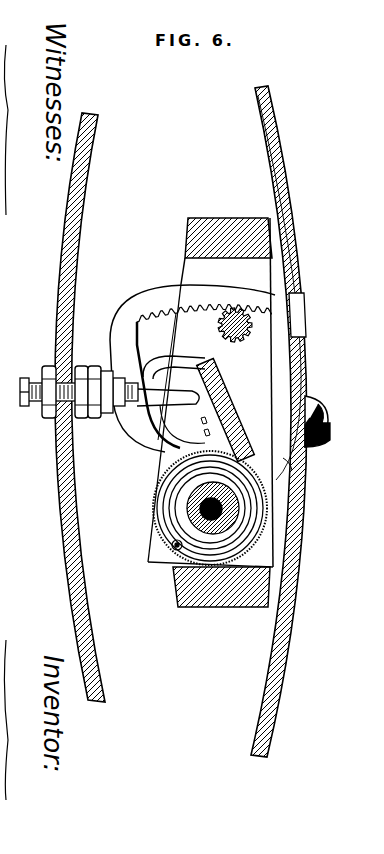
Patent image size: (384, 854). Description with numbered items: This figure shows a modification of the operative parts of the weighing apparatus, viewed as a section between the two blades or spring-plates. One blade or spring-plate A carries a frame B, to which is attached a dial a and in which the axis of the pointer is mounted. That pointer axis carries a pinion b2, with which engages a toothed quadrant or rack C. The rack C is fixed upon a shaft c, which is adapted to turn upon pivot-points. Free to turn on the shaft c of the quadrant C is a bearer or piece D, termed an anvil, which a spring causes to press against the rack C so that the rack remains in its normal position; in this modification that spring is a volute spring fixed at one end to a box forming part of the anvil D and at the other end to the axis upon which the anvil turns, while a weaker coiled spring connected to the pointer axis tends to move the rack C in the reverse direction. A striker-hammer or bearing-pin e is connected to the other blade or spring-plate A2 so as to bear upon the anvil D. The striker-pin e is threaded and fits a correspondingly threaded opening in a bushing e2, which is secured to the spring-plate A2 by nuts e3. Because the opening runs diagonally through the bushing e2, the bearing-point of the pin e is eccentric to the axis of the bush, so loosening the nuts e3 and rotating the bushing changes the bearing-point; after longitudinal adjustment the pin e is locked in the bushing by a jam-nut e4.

The blade or spring-plate A is at (290, 421).
The other blade or spring-plate A2 is at (74, 407).
The frame B is at (222, 411).
The toothed quadrant or rack C is at (187, 368).
The bearer or anvil D is at (226, 410).
The dial a is at (258, 521).
The pinion b2 is at (244, 325).
The shaft c is at (188, 507).
The striker-hammer or bearing-pin e is at (171, 381).
The bushing e2 is at (106, 410).
The nuts e3 is at (71, 381).
The jam-nut e4 is at (112, 414).